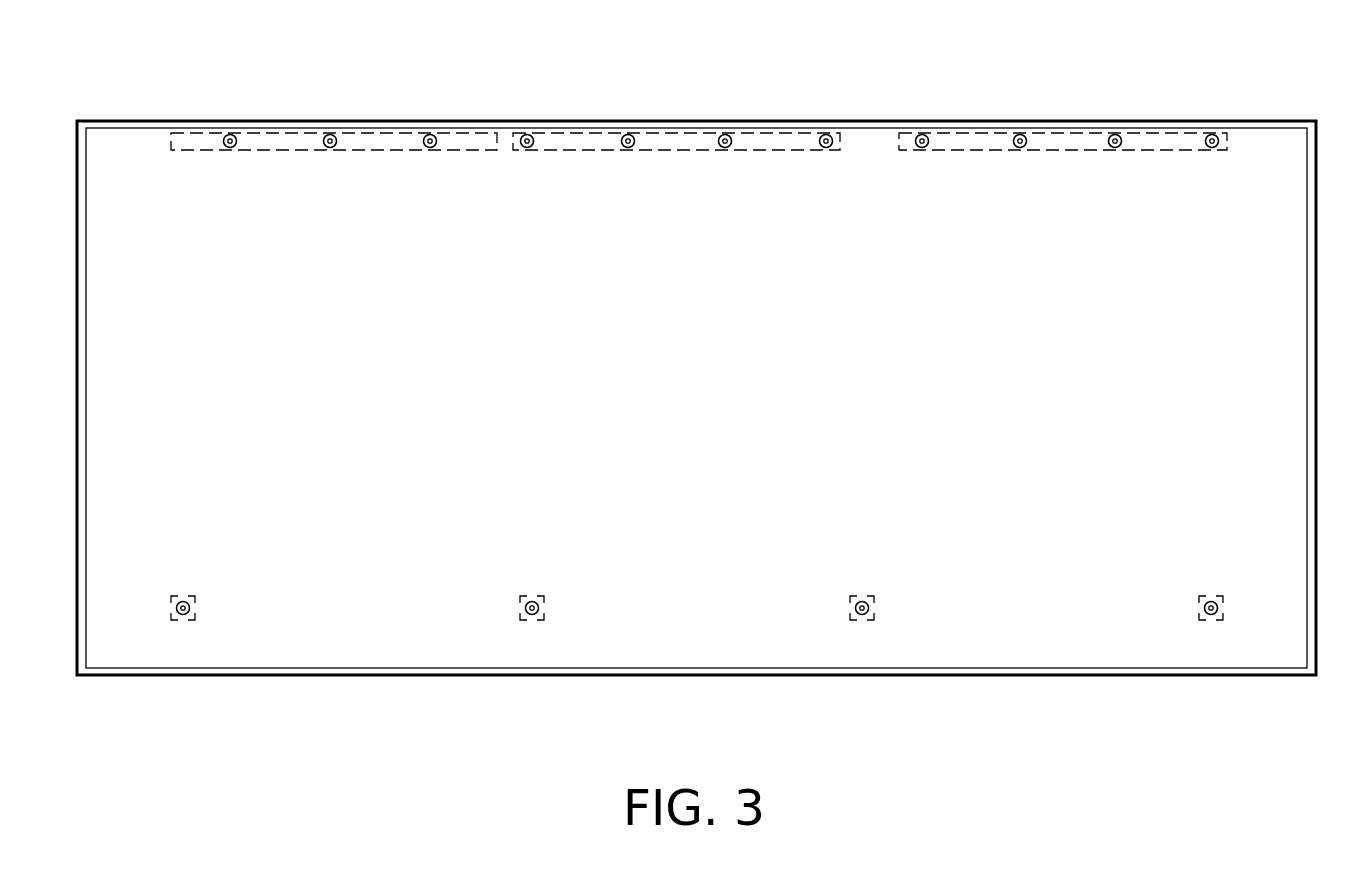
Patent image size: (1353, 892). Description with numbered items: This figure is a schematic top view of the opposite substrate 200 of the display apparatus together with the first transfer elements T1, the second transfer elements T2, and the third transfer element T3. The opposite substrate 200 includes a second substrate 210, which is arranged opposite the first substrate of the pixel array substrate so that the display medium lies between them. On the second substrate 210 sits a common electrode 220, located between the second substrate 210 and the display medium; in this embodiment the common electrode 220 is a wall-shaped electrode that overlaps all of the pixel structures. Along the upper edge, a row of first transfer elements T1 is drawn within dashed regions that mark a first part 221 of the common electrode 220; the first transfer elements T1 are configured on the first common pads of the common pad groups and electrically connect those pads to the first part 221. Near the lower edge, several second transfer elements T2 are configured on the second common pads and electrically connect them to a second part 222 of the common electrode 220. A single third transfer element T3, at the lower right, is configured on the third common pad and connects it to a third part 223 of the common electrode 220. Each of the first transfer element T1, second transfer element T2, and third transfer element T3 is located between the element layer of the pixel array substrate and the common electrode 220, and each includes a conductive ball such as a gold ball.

The opposite substrate 200 is at (1333, 776).
The second substrate 210 is at (102, 119).
The common electrode 220 is at (136, 127).
The first part of the common electrode 221 is at (470, 132).
The second part of the common electrode 222 is at (196, 611).
The third part of the common electrode 223 is at (1224, 611).
The first transfer element T1 is at (230, 134).
The second transfer element T2 is at (180, 614).
The third transfer element T3 is at (1208, 614).